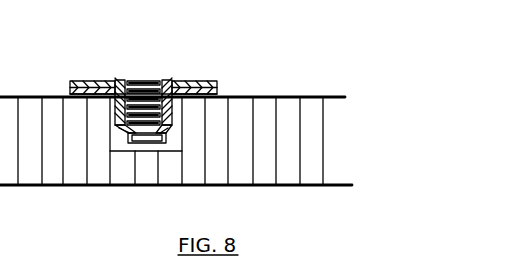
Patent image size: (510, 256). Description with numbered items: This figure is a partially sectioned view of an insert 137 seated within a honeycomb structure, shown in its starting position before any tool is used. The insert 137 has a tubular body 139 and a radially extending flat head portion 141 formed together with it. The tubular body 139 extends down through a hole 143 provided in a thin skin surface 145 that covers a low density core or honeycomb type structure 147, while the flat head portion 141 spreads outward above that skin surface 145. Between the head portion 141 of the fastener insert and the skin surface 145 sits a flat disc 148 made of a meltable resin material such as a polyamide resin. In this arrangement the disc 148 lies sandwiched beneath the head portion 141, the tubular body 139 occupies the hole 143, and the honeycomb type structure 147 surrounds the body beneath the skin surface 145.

The insert 137 is at (166, 120).
The tubular body 139 is at (114, 126).
The flat head portion 141 is at (166, 66).
The hole 143 is at (185, 98).
The thin skin surface 145 is at (315, 95).
The honeycomb type structure 147 is at (208, 115).
The flat disc 148 is at (217, 89).